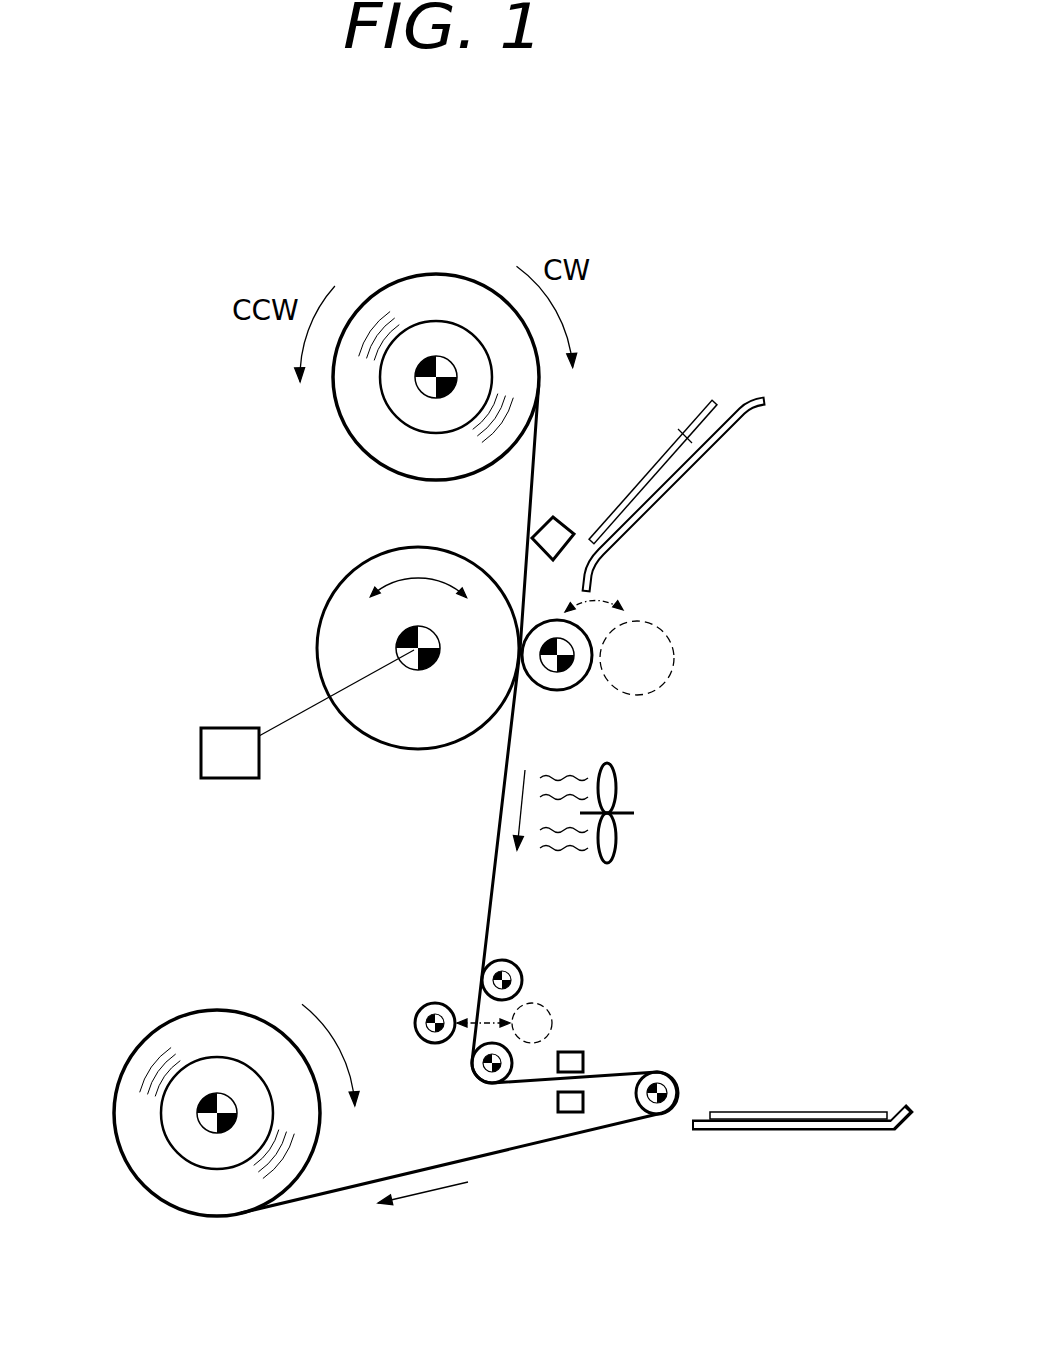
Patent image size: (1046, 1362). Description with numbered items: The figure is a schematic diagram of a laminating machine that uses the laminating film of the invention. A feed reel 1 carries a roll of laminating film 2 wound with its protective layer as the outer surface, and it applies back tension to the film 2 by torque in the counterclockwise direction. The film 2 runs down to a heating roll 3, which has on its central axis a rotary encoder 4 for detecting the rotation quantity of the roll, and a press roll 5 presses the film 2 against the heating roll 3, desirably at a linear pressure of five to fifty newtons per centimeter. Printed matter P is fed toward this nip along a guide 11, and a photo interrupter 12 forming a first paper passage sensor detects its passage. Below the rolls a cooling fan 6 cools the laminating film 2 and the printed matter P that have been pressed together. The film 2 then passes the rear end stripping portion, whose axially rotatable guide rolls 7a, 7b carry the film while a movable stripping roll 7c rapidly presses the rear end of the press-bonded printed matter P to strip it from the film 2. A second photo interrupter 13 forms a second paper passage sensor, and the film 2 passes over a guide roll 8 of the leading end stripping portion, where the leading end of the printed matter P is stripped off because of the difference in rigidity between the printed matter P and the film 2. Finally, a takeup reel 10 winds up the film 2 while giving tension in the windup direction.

The feed reel 1 is at (434, 357).
The laminating film 2 is at (536, 450).
The heating roll 3 is at (337, 625).
The rotary encoder 4 is at (220, 745).
The press roll 5 is at (578, 667).
The cooling fan 6 is at (607, 833).
The guide roll 7a is at (514, 962).
The guide roll 7b is at (479, 1068).
The movable stripping roll 7c is at (430, 1004).
The guide roll 8 is at (663, 1105).
The takeup reel 10 is at (185, 1105).
The guide 11 is at (734, 428).
The photo interrupter 12 is at (565, 520).
The photo interrupter 13 is at (578, 1052).
The printed matter P is at (718, 400).